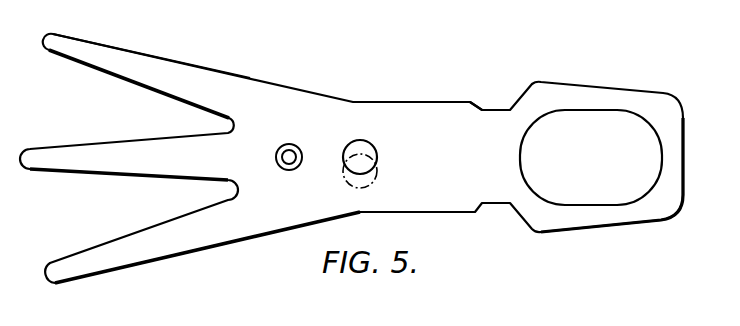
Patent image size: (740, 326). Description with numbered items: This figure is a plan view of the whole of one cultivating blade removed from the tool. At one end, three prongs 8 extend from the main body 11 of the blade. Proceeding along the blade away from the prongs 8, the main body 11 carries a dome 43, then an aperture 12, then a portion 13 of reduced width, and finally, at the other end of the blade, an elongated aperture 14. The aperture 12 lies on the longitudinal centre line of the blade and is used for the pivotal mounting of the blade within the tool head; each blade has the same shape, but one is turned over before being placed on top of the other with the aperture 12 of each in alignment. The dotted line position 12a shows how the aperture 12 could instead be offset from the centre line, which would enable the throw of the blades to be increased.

The prongs 8 is at (108, 55).
The main body 11 is at (433, 165).
The aperture 12 is at (364, 141).
The dotted line position 12a is at (343, 188).
The portion of reduced width 13 is at (496, 100).
The elongated aperture 14 is at (598, 163).
The dome 43 is at (290, 151).